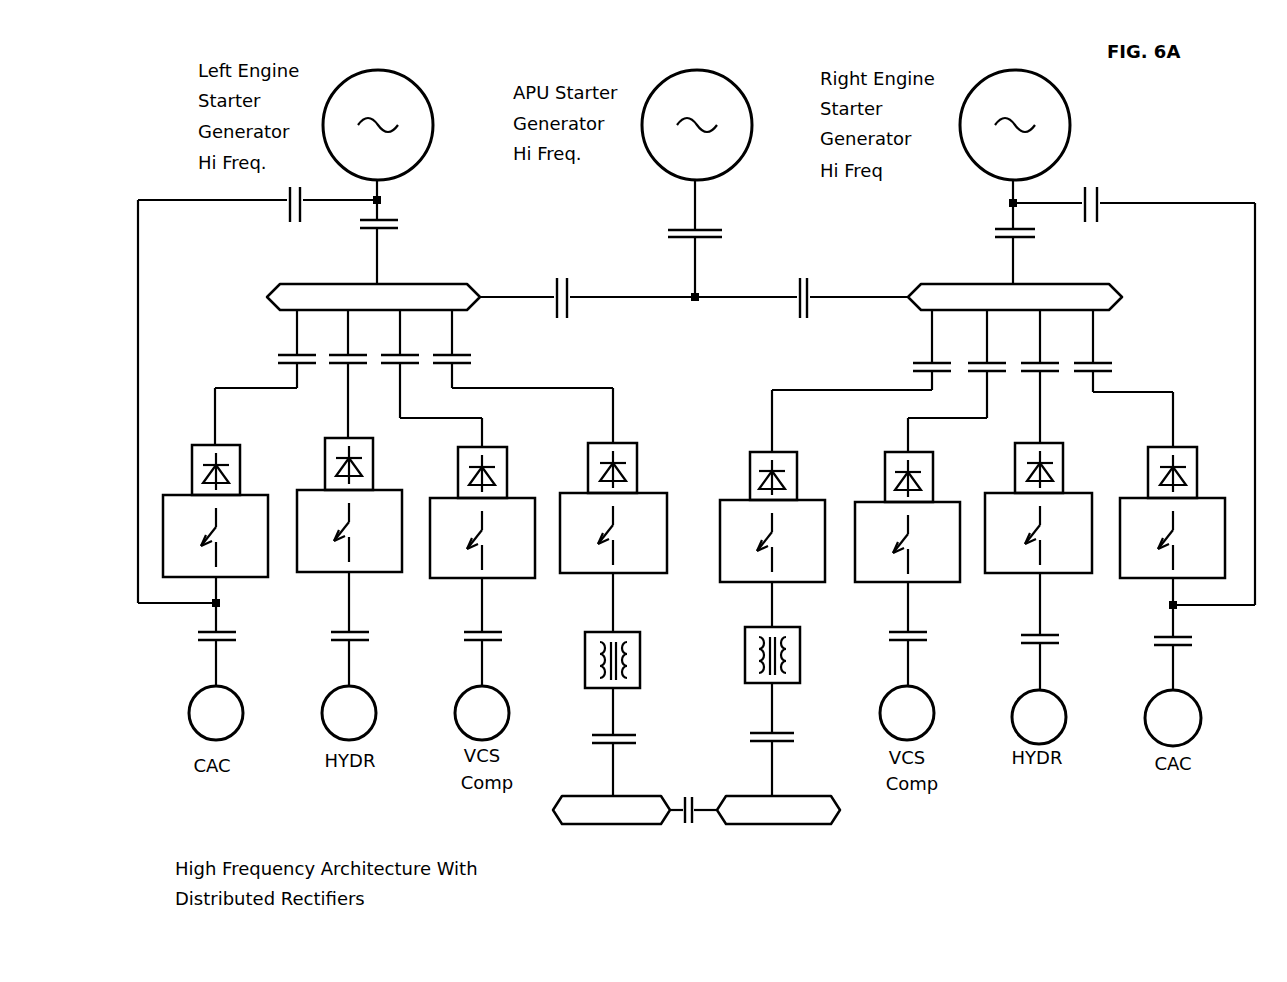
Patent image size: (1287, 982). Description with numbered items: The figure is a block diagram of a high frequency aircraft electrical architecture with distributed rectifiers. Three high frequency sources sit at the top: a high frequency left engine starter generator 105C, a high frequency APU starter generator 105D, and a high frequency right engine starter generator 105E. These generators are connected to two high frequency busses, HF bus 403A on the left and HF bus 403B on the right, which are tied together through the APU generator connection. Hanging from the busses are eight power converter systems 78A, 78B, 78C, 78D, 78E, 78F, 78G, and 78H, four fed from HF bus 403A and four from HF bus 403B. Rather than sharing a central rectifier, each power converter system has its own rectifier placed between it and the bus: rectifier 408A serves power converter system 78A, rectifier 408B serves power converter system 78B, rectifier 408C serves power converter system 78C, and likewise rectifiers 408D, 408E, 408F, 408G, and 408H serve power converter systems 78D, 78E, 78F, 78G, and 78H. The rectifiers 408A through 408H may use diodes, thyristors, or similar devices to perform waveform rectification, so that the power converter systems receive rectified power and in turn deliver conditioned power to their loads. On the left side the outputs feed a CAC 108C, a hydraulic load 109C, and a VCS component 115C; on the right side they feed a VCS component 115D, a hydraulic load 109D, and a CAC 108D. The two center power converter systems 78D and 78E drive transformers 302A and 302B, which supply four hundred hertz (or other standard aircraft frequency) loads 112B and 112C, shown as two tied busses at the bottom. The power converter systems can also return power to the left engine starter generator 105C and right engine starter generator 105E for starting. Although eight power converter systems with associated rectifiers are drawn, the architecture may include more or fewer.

The high frequency left engine starter generator 105C is at (377, 70).
The high frequency APU starter generator 105D is at (695, 70).
The high frequency right engine starter generator 105E is at (1013, 70).
The HF bus 403A is at (440, 284).
The HF bus 403B is at (1060, 284).
The rectifier 408A is at (237, 445).
The rectifier 408B is at (373, 458).
The rectifier 408C is at (505, 447).
The rectifier 408D is at (637, 463).
The rectifier 408E is at (755, 452).
The rectifier 408F is at (885, 470).
The rectifier 408G is at (1015, 465).
The rectifier 408H is at (1148, 470).
The power converter system 78A is at (250, 577).
The power converter system 78B is at (383, 572).
The power converter system 78C is at (517, 578).
The power converter system 78D is at (648, 573).
The power converter system 78E is at (790, 582).
The power converter system 78F is at (940, 582).
The power converter system 78G is at (1075, 573).
The power converter system 78H is at (1140, 578).
The transformer 302A is at (640, 648).
The transformer 302B is at (745, 675).
The 400 Hz loads 112B is at (613, 825).
The 400 Hz loads 112C is at (783, 825).
The CAC 108C is at (189, 713).
The hydraulic load 109C is at (377, 713).
The VCS component 115C is at (509, 713).
The VCS component 115D is at (880, 713).
The hydraulic load 109D is at (1066, 717).
The CAC 108D is at (1201, 718).